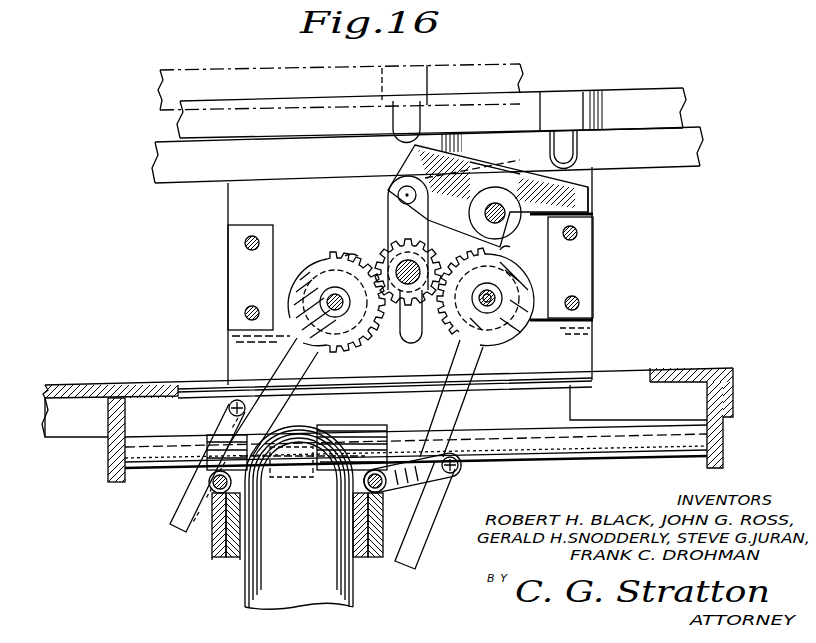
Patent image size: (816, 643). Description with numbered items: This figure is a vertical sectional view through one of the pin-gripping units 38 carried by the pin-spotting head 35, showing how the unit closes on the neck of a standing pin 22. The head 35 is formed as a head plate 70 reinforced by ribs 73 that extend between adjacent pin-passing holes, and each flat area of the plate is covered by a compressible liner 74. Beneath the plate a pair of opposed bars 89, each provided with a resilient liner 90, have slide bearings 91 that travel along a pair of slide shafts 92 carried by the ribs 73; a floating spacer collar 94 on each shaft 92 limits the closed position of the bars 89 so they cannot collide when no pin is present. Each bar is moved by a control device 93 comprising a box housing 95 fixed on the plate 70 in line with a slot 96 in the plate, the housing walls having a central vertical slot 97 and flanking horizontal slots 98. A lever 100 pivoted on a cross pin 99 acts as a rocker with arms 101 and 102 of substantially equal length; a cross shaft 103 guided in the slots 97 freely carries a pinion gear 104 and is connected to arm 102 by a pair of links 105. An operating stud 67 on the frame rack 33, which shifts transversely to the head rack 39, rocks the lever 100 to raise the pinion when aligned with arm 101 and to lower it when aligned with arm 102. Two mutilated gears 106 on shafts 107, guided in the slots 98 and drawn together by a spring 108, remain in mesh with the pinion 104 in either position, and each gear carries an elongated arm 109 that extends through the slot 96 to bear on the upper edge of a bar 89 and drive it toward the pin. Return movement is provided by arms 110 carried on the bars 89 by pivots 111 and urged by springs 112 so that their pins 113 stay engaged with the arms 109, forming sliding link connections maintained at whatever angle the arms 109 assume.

The pin 22 is at (287, 593).
The frame rack 33 is at (522, 72).
The pin-spotting head 35 is at (124, 356).
The pin-gripping unit 38 is at (208, 556).
The head rack 39 is at (686, 166).
The operating stud 67 is at (393, 123).
The head plate 70 is at (692, 368).
The rib 73 is at (110, 482).
The liner 74 is at (57, 433).
The bar 89 is at (217, 560).
The resilient liner 90 is at (237, 560).
The slide bearing 91 is at (207, 438).
The slide shaft 92 is at (540, 457).
The control device 93 is at (597, 268).
The floating spacer collar 94 is at (318, 415).
The box housing 95 is at (585, 338).
The slot 96 is at (213, 388).
The central vertical slot 97 is at (423, 343).
The horizontal slot 98 is at (300, 270).
The cross pin 99 is at (485, 210).
The lever 100 is at (510, 176).
The arm 101 is at (590, 200).
The arm 102 is at (412, 152).
The cross shaft 103 is at (372, 242).
The pinion gear 104 is at (423, 253).
The link 105 is at (395, 220).
The mutilated gear 106 is at (347, 250).
The shaft 107 is at (330, 312).
The spring 108 is at (483, 286).
The elongated arm 109 is at (178, 530).
The arm 110 is at (228, 412).
The pivot 111 is at (352, 451).
The spring 112 is at (213, 459).
The pin 113 is at (266, 382).